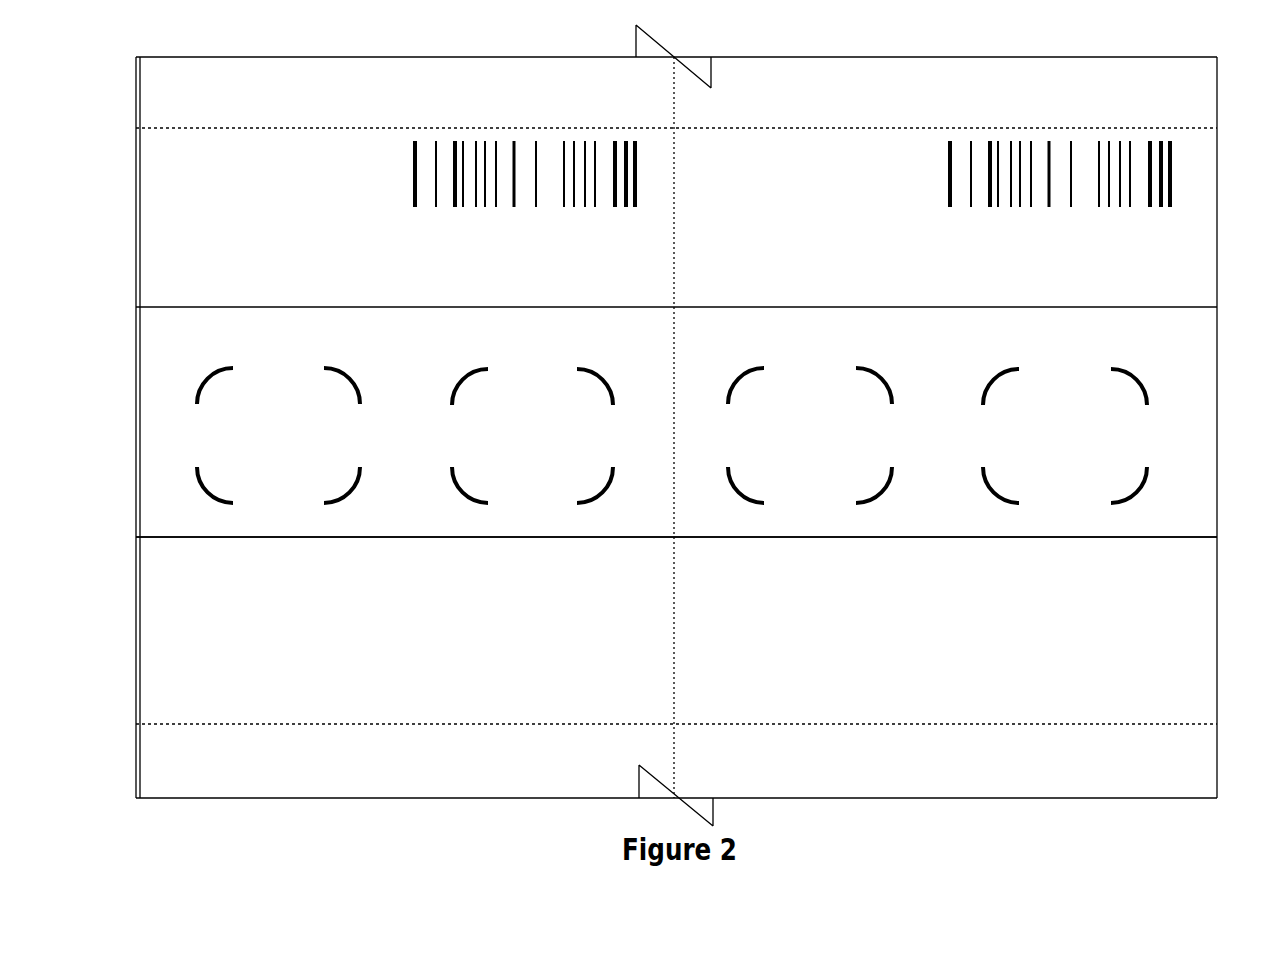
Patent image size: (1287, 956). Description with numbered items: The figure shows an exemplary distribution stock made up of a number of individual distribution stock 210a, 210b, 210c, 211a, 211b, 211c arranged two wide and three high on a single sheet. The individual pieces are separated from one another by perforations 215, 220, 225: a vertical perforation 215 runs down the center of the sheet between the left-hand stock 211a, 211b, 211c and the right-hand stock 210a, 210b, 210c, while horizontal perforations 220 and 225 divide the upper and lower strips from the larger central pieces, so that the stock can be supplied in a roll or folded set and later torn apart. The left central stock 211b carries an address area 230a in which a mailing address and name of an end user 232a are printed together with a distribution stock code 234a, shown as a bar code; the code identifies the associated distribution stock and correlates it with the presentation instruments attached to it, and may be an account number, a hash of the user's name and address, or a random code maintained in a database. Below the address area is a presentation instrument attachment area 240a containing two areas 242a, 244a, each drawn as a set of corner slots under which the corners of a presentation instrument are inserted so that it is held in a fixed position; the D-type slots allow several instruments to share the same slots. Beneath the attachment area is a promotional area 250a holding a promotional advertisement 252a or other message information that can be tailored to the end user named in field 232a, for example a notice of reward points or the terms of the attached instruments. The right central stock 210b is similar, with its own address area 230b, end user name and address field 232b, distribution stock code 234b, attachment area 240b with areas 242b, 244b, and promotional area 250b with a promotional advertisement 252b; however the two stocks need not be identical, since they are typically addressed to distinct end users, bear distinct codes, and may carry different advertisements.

The individual distribution stock 210a is at (1208, 121).
The individual distribution stock 210b is at (1217, 250).
The individual distribution stock 210c is at (1207, 791).
The individual distribution stock 211a is at (200, 121).
The individual distribution stock 211b is at (136, 220).
The individual distribution stock 211c is at (199, 791).
The perforation 215 is at (674, 187).
The perforation 220 is at (843, 128).
The perforation 225 is at (928, 724).
The address area 230a is at (200, 298).
The address area 230b is at (1208, 298).
The mailing address and name of an end user 232a is at (257, 207).
The mailing address and name of an end user 232b is at (802, 210).
The distribution stock code 234a is at (522, 202).
The distribution stock code 234b is at (1057, 202).
The presentation instrument attachment area 240a is at (200, 531).
The presentation instrument attachment area 240b is at (1208, 531).
The area to attach presentation instruments 242a is at (268, 382).
The area to attach presentation instruments 242b is at (800, 382).
The area to attach presentation instruments 244a is at (523, 382).
The area to attach presentation instruments 244b is at (1057, 382).
The promotional area 250a is at (200, 718).
The promotional area 250b is at (1208, 718).
The promotional advertisement 252a is at (300, 633).
The promotional advertisement 252b is at (838, 633).